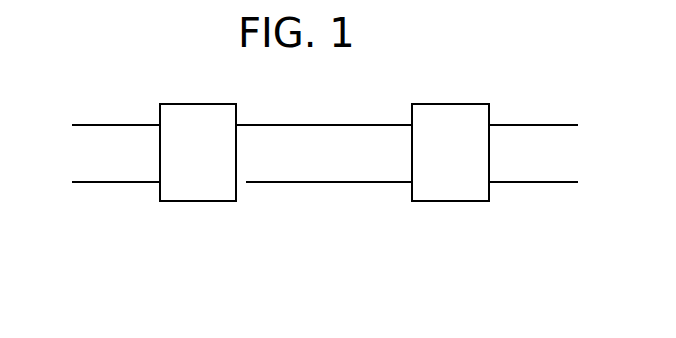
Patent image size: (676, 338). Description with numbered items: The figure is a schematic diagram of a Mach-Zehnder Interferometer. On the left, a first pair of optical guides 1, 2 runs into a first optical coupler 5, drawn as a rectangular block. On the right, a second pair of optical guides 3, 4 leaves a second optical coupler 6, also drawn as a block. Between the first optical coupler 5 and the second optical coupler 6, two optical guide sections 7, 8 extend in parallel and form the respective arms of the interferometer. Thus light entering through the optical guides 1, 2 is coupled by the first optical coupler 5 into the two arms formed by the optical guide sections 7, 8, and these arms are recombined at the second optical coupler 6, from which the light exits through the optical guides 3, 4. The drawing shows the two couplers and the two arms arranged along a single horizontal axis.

The optical guide 1 is at (87, 125).
The optical guide 2 is at (95, 183).
The optical guide 3 is at (538, 125).
The optical guide 4 is at (538, 183).
The first optical coupler 5 is at (191, 202).
The second optical coupler 6 is at (443, 202).
The optical guide section 7 is at (313, 125).
The optical guide section 8 is at (312, 183).